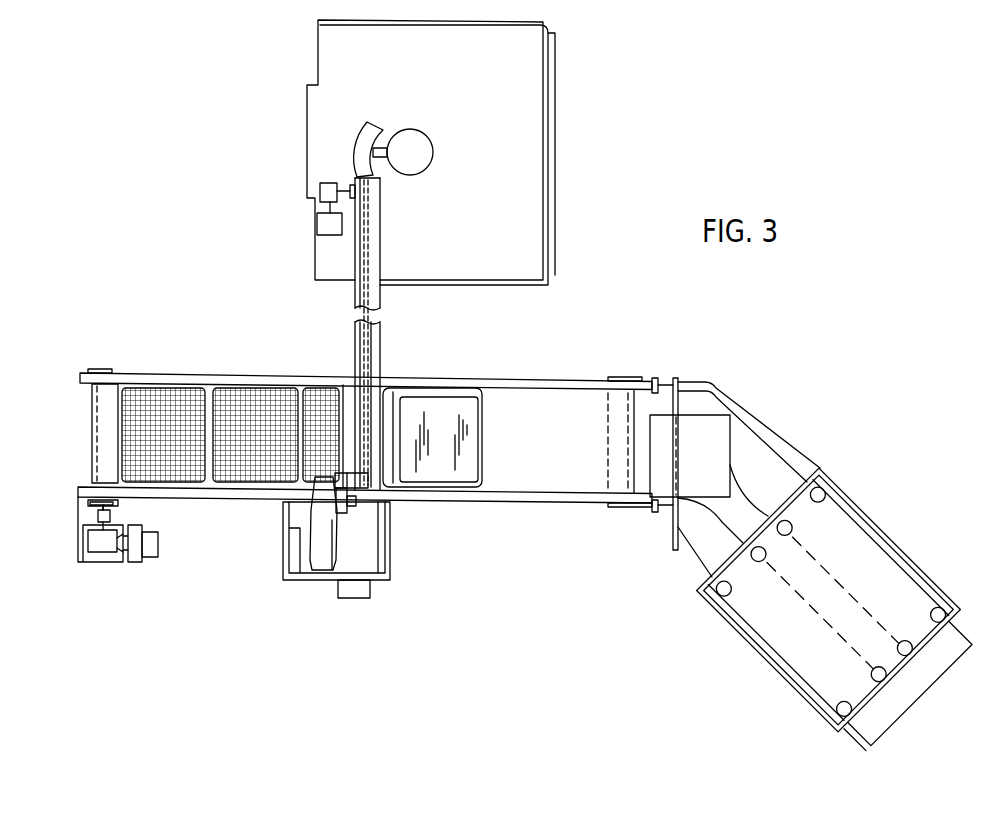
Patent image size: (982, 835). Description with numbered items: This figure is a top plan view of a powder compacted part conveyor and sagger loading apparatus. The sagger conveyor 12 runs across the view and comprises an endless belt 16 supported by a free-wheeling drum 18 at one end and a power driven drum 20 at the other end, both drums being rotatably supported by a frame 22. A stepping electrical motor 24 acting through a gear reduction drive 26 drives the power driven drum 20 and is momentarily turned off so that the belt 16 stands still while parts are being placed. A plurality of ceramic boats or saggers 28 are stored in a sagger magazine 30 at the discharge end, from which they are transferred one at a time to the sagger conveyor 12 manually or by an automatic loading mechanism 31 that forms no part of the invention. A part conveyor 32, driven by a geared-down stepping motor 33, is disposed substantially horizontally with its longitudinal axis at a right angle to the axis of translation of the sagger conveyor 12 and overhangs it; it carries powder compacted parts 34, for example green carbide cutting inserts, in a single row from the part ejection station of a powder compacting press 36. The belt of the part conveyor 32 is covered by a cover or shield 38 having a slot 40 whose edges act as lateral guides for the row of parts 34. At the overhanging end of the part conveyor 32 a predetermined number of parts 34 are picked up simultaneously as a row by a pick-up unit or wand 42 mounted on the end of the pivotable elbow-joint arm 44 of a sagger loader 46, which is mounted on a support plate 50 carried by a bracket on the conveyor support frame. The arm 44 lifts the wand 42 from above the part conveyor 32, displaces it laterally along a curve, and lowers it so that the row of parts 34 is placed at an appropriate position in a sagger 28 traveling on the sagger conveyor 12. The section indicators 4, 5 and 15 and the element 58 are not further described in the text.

The section line 4- 4 is at (336, 517).
The section line 5- 5 is at (297, 583).
The sagger conveyor 12 is at (353, 367).
The section line 15- 15 is at (335, 325).
The endless belt 16 is at (530, 410).
The free-wheeling drum 18 is at (628, 377).
The power driven drum 20 is at (108, 392).
The frame 22 is at (432, 380).
The stepping electrical motor 24 is at (153, 557).
The gear reduction drive 26 is at (107, 543).
The sagger 28 is at (227, 386).
The sagger magazine 30 is at (920, 512).
The automatic loading mechanism 31 is at (716, 432).
The part conveyor 32 is at (353, 295).
The geared-down stepping motor 33 is at (328, 232).
The powder compacted parts 34 is at (367, 230).
The powder compacting press 36 is at (565, 122).
The cover or shield 38 is at (378, 243).
The slot 40 is at (370, 270).
The pick-up unit or wand 42 is at (335, 406).
The elbow-joint arm 44 is at (345, 522).
The sagger loader 46 is at (330, 585).
The support plate 50 is at (385, 561).
The base block 58 is at (355, 598).